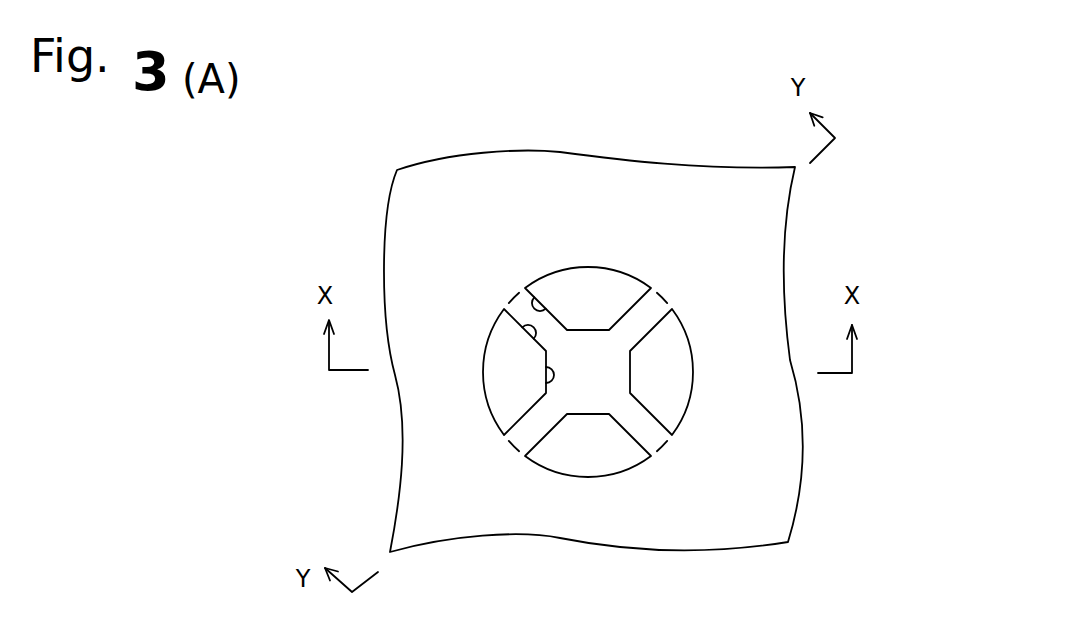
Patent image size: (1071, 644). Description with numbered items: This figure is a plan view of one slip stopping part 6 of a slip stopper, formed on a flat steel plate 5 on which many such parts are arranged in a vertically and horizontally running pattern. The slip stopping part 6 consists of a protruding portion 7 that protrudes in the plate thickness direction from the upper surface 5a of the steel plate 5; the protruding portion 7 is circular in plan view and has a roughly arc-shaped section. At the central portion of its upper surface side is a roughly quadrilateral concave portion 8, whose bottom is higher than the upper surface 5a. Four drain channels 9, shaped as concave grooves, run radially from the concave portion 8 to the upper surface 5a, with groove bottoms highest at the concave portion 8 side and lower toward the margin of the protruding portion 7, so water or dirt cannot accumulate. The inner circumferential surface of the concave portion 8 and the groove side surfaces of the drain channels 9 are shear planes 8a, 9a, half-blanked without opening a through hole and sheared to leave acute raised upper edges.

The steel plate 5 is at (523, 177).
The upper surface of the steel plate 5a is at (490, 212).
The slip stopping part 6 is at (680, 295).
The protruding portion 7 is at (668, 380).
The concave portion 8 is at (593, 350).
The shear plane 8a is at (557, 382).
The drain channel 9 is at (637, 425).
The shear plane 9a is at (530, 300).